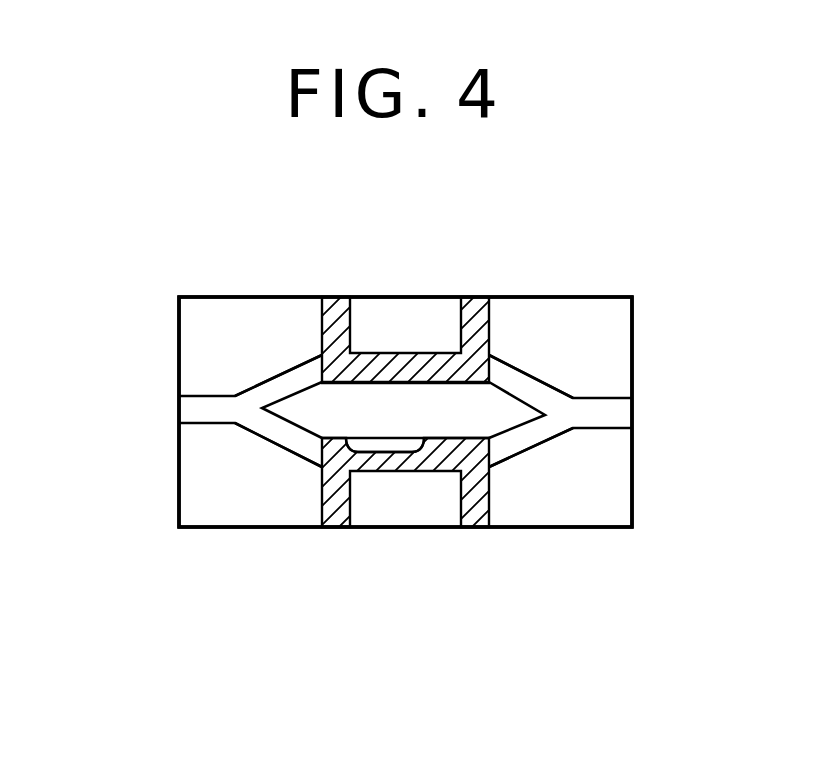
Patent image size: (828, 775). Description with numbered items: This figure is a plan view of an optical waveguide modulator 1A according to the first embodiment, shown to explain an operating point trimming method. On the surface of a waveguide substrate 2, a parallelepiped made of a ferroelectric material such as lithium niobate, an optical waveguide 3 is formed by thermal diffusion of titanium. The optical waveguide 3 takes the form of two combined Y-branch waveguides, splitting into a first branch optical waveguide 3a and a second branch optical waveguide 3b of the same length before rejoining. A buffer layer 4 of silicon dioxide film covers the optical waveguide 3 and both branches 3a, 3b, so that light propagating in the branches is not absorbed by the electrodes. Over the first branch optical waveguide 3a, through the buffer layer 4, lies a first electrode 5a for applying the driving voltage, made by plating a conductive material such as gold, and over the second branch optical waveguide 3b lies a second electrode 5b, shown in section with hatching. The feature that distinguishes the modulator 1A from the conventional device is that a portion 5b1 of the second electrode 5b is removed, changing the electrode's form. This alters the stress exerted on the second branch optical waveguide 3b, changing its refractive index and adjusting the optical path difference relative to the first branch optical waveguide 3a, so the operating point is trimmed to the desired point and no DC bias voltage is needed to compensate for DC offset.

The optical waveguide modulator 1A is at (452, 285).
The waveguide substrate 2 is at (608, 530).
The optical waveguide 3 is at (207, 393).
The first branch optical waveguide 3a is at (275, 377).
The second branch optical waveguide 3b is at (286, 449).
The buffer layer 4 is at (233, 495).
The first electrode 5a is at (407, 353).
The second electrode 5b is at (413, 471).
The removed portion of the second electrode 5b1 is at (368, 443).